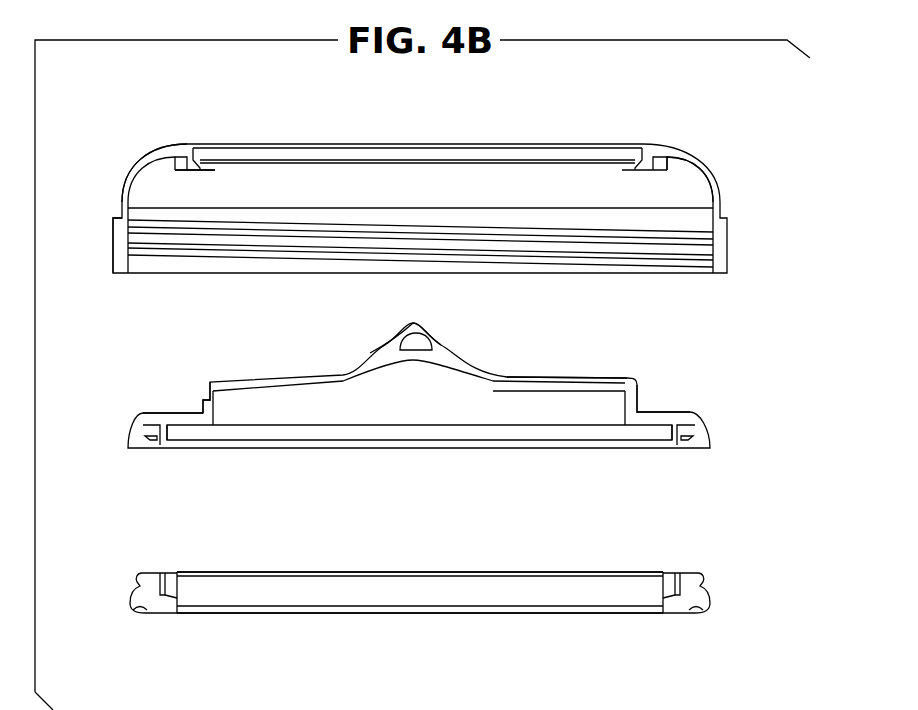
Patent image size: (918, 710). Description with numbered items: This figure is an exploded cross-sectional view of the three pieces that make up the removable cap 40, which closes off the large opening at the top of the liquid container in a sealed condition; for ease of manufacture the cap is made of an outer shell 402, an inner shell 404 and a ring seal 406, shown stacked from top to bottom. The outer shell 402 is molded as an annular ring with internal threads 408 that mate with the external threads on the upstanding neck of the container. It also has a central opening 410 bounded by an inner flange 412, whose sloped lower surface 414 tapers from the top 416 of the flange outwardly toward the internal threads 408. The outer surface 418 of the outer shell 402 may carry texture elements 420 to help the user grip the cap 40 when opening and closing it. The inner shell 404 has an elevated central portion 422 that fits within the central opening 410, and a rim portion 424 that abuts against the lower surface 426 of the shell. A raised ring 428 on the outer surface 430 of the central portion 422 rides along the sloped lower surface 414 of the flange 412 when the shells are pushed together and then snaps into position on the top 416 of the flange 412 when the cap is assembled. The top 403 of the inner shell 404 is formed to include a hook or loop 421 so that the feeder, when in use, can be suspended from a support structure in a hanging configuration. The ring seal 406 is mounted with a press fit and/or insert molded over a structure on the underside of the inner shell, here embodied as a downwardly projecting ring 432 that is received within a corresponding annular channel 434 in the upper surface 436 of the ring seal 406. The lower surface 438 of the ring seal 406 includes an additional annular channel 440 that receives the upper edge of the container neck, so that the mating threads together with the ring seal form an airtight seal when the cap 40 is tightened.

The removable cap 40 is at (731, 123).
The outer shell 402 is at (722, 203).
The top of the inner shell 403 is at (470, 362).
The inner shell 404 is at (692, 412).
The ring seal 406 is at (705, 574).
The internal threads 408 is at (692, 264).
The central opening 410 is at (207, 152).
The inner flange 412 is at (625, 158).
The sloped lower surface 414 is at (206, 172).
The top of the flange 416 is at (635, 148).
The outer surface 418 is at (121, 198).
The texture elements 420 is at (113, 227).
The hook or loop 421 is at (428, 326).
The elevated central portion 422 is at (580, 378).
The rim portion 424 is at (650, 412).
The lower surface 426 is at (672, 172).
The raised ring 428 is at (200, 401).
The outer surface of the central portion 430 is at (195, 411).
The downwardly projecting ring 432 is at (160, 445).
The annular channel 434 is at (150, 590).
The upper surface of the ring seal 436 is at (212, 571).
The lower surface of the ring seal 438 is at (597, 614).
The additional annular channel 440 is at (140, 614).